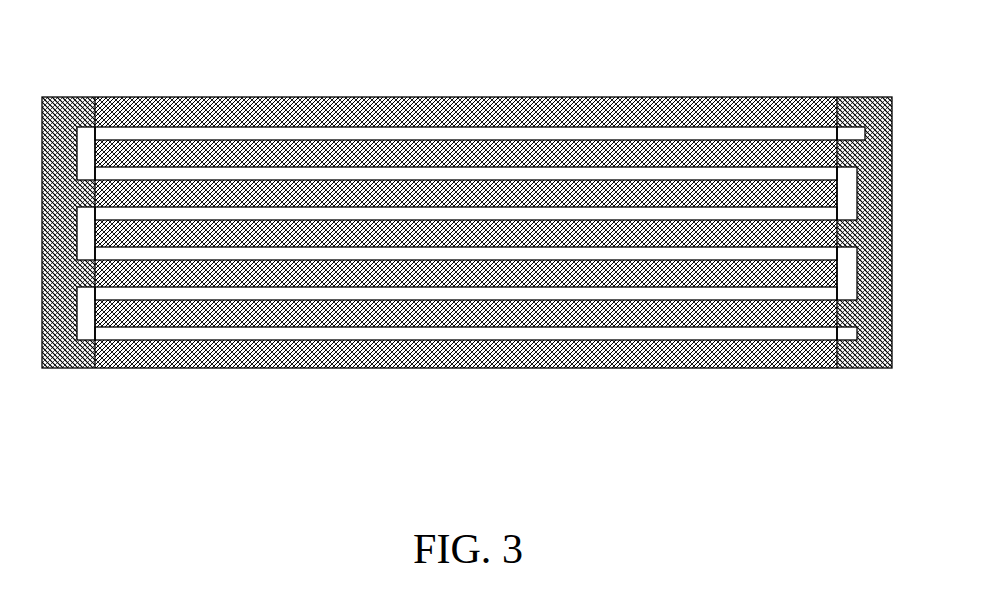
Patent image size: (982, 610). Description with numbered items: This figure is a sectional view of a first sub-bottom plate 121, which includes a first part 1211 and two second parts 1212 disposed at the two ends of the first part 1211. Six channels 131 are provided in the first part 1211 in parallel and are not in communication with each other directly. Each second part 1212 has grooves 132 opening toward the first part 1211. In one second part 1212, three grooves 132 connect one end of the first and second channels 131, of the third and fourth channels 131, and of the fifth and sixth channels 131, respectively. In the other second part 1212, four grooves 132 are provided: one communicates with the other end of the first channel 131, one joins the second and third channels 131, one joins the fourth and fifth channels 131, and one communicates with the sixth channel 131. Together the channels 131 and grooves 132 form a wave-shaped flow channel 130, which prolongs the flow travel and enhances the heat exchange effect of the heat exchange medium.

The first sub-bottom plate 121 is at (467, 240).
The first part 1211 is at (363, 353).
The second part 1212 is at (57, 353).
The flow channel 130 is at (471, 170).
The channel 131 is at (663, 333).
The groove 132 is at (84, 316).